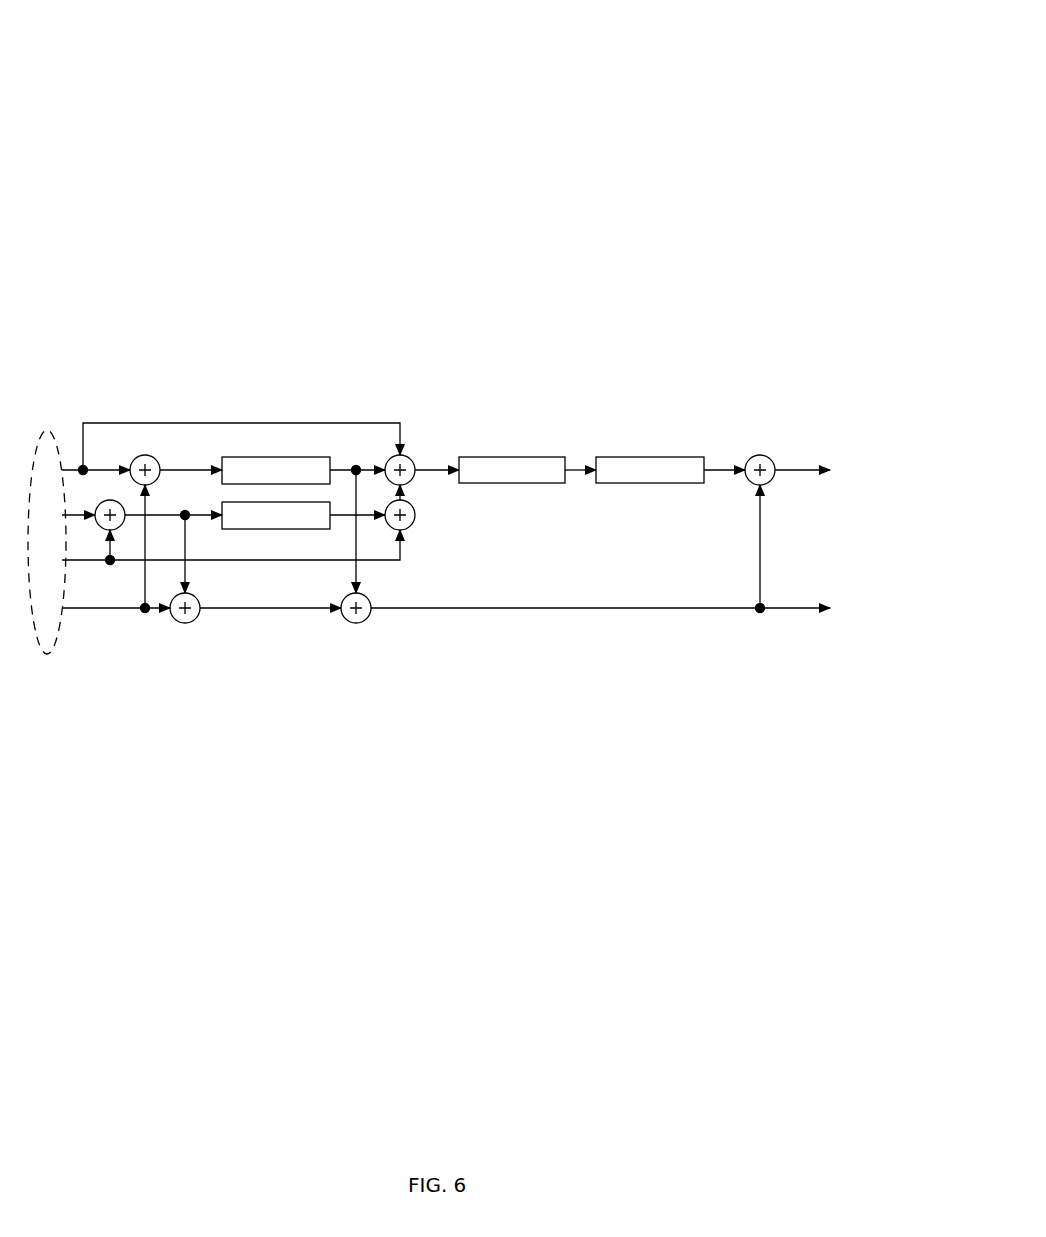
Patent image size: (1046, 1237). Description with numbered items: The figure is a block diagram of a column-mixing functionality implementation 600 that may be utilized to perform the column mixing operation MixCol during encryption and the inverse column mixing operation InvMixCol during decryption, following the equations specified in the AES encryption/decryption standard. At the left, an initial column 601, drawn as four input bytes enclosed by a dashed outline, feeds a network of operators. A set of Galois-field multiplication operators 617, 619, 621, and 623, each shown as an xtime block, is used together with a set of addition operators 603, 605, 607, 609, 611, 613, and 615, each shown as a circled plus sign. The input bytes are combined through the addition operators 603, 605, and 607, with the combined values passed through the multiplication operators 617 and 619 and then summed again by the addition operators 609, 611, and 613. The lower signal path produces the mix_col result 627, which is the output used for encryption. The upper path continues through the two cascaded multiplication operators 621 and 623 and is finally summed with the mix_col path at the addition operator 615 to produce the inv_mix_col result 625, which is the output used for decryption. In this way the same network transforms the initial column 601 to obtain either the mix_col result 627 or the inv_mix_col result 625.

The column-mixing functionality implementation 600 is at (173, 145).
The initial column 601 is at (50, 654).
The addition operator 603 is at (109, 500).
The addition operator 605 is at (143, 455).
The addition operator 607 is at (181, 624).
The addition operator 609 is at (352, 624).
The addition operator 611 is at (412, 458).
The addition operator 613 is at (416, 516).
The addition operator 615 is at (763, 455).
The GF(256) multiplication operator 617 is at (265, 457).
The GF(256) multiplication operator 619 is at (278, 529).
The GF(256) multiplication operator 621 is at (535, 457).
The GF(256) multiplication operator 623 is at (640, 457).
The inv_mix_col result 625 is at (873, 464).
The mix_col result 627 is at (843, 616).